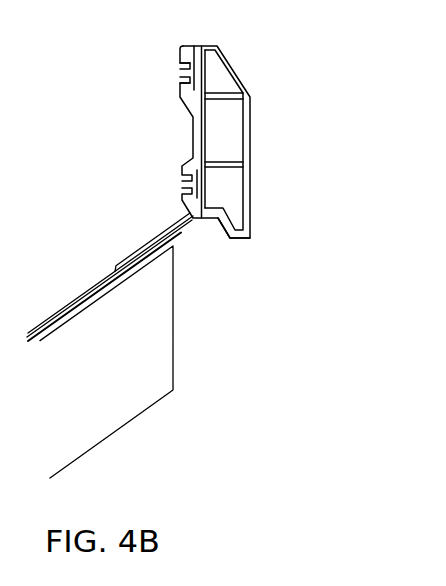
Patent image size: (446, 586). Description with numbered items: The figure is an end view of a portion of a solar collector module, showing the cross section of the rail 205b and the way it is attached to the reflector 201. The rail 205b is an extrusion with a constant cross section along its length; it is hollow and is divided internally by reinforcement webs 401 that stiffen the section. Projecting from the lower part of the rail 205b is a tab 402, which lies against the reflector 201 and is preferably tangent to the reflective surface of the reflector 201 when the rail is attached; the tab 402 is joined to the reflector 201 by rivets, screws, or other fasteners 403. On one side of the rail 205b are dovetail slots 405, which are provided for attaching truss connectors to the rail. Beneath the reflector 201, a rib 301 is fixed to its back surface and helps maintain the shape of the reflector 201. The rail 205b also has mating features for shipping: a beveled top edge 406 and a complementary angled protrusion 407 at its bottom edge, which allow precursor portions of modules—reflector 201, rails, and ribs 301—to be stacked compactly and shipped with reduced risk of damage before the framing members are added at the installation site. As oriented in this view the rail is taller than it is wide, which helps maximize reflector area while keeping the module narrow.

The reflector 201 is at (72, 305).
The rail 205b is at (192, 134).
The rib 301 is at (133, 401).
The internal reinforcement web 401 is at (208, 171).
The tab 402 is at (178, 228).
The fastener 403 is at (132, 253).
The dovetail slot 405 is at (188, 73).
The beveled top edge 406 is at (227, 60).
The angled protrusion 407 is at (227, 231).